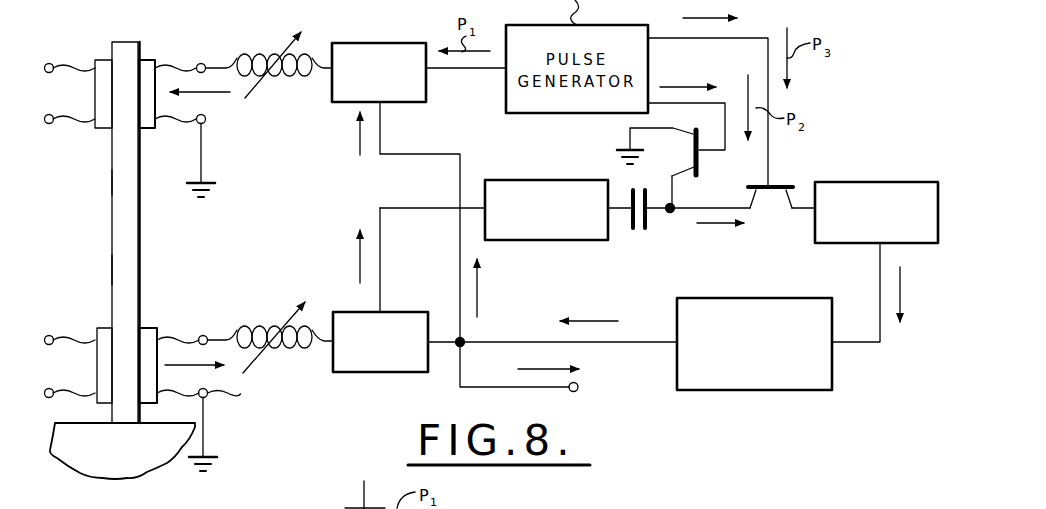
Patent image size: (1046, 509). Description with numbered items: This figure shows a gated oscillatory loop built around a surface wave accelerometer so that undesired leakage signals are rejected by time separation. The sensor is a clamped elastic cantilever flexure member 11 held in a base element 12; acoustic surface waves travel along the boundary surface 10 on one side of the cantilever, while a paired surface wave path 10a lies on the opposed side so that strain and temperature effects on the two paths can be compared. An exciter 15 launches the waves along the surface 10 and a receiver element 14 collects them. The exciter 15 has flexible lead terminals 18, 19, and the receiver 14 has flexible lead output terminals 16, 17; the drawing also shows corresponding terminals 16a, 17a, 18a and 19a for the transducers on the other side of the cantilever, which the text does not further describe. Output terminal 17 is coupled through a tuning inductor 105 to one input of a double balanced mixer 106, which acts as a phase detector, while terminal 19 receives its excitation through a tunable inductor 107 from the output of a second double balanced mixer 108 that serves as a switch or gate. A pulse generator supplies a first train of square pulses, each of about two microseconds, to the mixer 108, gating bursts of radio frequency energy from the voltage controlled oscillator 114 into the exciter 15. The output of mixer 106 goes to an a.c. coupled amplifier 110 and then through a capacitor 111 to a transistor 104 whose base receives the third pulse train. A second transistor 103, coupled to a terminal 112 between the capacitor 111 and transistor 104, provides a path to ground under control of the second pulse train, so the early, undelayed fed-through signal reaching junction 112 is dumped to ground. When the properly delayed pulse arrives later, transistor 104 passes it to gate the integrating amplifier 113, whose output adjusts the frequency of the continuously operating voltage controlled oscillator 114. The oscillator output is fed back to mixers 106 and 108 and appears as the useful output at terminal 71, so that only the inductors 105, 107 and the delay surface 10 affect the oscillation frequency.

The boundary surface 10 is at (140, 245).
The surface wave path 10a is at (112, 269).
The cantilever flexure member 11 is at (103, 184).
The base element 12 is at (88, 458).
The receiver element 14 is at (149, 328).
The exciter 15 is at (147, 60).
The flexible lead output terminal 16 is at (210, 430).
The terminal 16a is at (64, 372).
The flexible lead output terminal 17 is at (205, 335).
The terminal 17a is at (52, 334).
The flexible lead terminal 18 is at (205, 123).
The terminal 18a is at (50, 124).
The flexible lead terminal 19 is at (203, 62).
The terminal 19a is at (50, 64).
The output terminal 71 is at (578, 387).
The second transistor 103 is at (699, 160).
The transistor 104 is at (786, 185).
The tuning inductor 105 is at (270, 323).
The double balanced mixer 106 is at (403, 372).
The tunable inductor 107 is at (291, 76).
The double balanced mixer 108 is at (376, 43).
The amplifier 110 is at (548, 240).
The capacitor 111 is at (634, 228).
The terminal 112 is at (672, 213).
The integrating amplifier 113 is at (895, 182).
The voltage controlled oscillator 114 is at (832, 358).